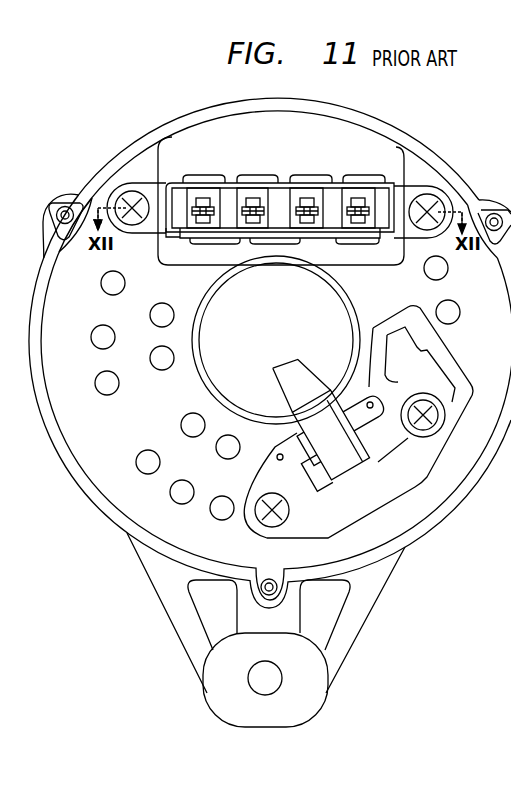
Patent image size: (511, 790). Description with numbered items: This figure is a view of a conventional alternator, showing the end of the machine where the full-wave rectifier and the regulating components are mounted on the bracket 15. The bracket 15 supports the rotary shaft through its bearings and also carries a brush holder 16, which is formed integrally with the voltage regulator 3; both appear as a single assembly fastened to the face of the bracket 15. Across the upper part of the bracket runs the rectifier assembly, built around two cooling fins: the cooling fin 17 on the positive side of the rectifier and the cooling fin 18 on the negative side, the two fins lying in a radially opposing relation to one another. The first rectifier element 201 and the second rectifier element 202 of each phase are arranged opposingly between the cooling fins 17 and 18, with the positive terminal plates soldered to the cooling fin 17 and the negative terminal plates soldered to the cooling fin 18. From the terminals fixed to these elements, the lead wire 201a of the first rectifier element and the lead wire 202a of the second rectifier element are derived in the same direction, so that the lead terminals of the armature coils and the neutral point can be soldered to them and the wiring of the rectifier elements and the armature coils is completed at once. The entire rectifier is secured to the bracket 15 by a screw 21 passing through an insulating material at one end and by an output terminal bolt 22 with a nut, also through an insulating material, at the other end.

The voltage regulator 3 is at (378, 498).
The bracket 15 is at (162, 586).
The brush holder 16 is at (357, 453).
The cooling fin 17 is at (174, 180).
The cooling fin 18 is at (232, 239).
The screw 21 is at (434, 196).
The output terminal bolt 22 is at (126, 195).
The first rectifier element 201 is at (245, 192).
The lead wire 201a is at (303, 200).
The second rectifier element 202 is at (306, 217).
The lead wire 202a is at (309, 233).